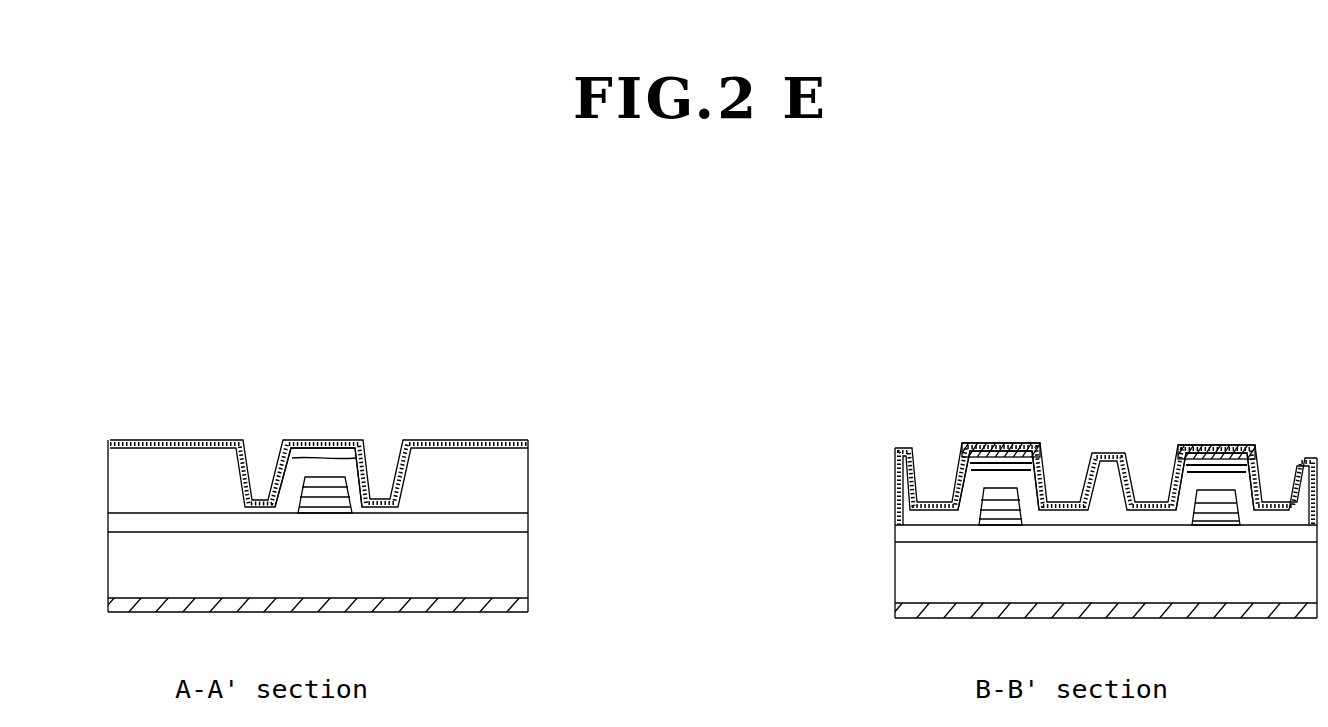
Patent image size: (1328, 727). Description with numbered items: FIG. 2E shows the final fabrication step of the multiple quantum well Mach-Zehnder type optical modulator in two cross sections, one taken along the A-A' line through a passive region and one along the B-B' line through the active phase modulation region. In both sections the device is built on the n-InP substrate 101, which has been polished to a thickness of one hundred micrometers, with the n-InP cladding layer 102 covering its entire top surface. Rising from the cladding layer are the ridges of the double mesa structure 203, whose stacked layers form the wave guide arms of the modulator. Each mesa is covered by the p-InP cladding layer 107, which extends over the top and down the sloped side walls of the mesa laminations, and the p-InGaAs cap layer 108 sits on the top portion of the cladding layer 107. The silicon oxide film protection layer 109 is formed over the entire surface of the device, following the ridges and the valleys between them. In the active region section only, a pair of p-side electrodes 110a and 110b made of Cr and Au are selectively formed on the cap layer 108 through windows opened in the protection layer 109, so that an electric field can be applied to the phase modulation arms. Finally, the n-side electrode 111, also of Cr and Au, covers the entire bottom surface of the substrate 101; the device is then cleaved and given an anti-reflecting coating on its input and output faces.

The n-InP substrate 101 is at (515, 567).
The n-InP cladding layer 102 is at (520, 525).
The p-InP cladding layer 107 is at (348, 480).
The p-InGaAs cap layer 108 is at (300, 440).
The silicon oxide film protection layer 109 is at (455, 443).
The p-side electrode 110a is at (1005, 445).
The p-side electrode 110b is at (1203, 445).
The n-side electrode 111 is at (522, 605).
The double mesa structure 203 is at (297, 507).